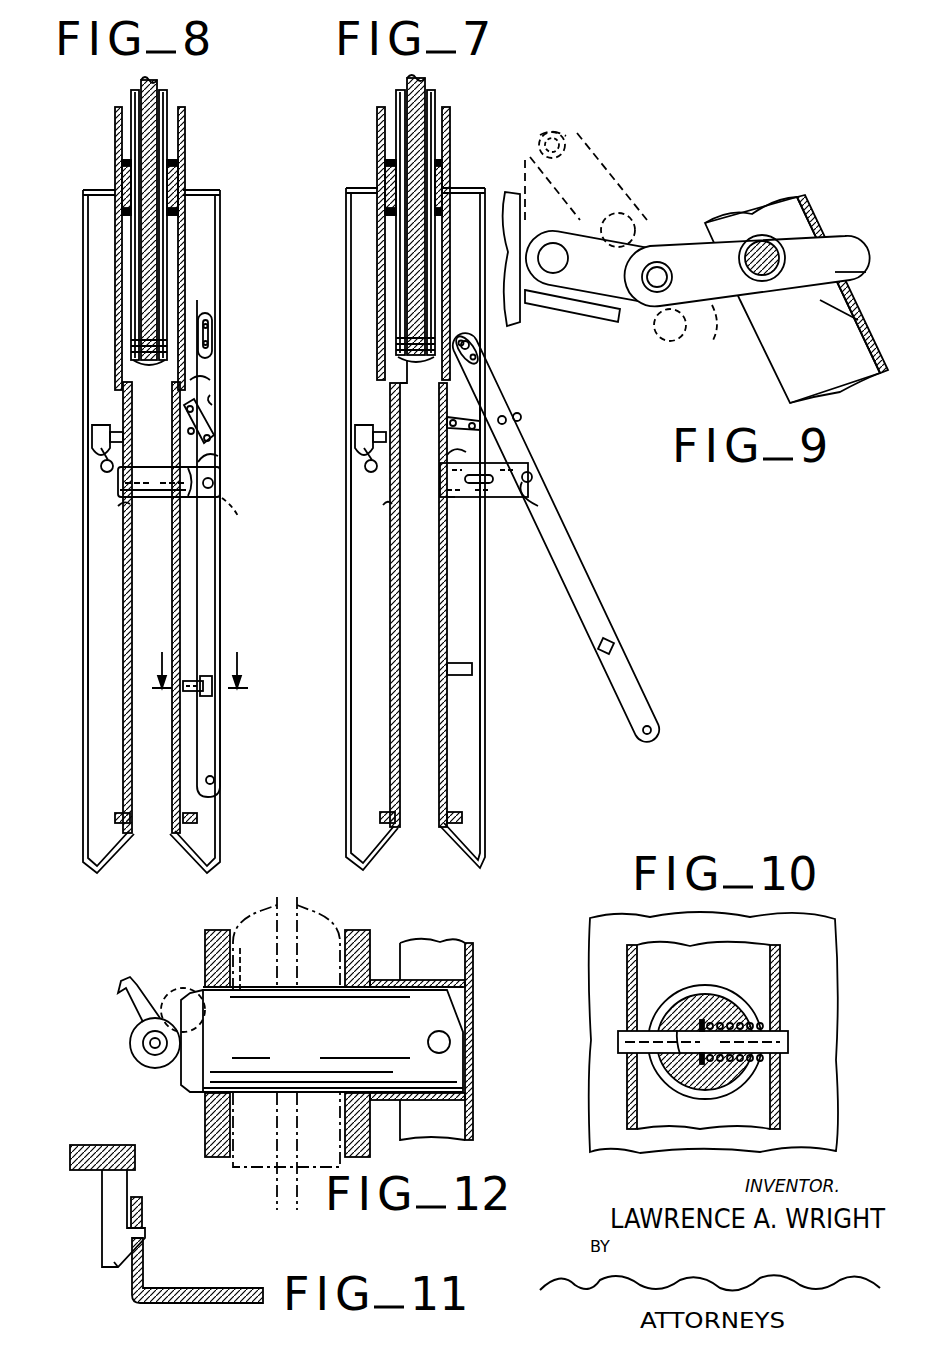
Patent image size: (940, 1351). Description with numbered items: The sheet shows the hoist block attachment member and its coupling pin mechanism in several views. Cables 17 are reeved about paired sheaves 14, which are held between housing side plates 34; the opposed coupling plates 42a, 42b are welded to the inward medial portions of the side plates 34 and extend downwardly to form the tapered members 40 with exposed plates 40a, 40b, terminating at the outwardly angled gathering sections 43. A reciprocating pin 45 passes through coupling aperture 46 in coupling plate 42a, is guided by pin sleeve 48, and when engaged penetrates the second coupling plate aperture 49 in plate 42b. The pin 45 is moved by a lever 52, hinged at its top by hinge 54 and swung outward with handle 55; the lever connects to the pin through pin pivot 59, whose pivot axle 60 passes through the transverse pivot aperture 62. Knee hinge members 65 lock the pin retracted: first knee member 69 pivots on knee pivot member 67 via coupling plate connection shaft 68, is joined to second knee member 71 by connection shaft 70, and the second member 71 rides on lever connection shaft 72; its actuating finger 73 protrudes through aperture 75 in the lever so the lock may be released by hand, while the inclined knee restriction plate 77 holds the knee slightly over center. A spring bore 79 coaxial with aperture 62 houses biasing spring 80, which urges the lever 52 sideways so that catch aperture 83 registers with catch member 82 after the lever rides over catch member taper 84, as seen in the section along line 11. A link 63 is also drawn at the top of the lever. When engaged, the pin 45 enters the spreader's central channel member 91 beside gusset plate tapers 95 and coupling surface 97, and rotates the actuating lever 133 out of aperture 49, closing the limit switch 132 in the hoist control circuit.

In FIG. 8, the sheaves 14 is at (133, 95).
In FIG. 7, the sheaves 14 is at (398, 95).
In FIG. 8, the cables 17 is at (157, 80).
In FIG. 7, the cables 17 is at (425, 78).
In FIG. 8, the housing side plates 34 is at (115, 150).
In FIG. 7, the housing side plates 34 is at (377, 138).
In FIG. 8, the tapered members 40 is at (82, 655).
In FIG. 7, the tapered members 40 is at (490, 586).
In FIG. 7, the exposed plate 40a is at (488, 632).
In FIG. 8, the exposed plate 40b is at (83, 605).
In FIG. 7, the exposed plate 40b is at (346, 610).
In FIG. 8, the coupling plate 42a is at (231, 607).
In FIG. 7, the coupling plate 42a is at (447, 752).
In FIG. 9, the coupling plate 42a is at (514, 185).
In FIG. 12, the coupling plate 42a is at (370, 1148).
In FIG. 8, the coupling plate 42b is at (123, 745).
In FIG. 7, the coupling plate 42b is at (390, 746).
In FIG. 12, the coupling plate 42b is at (205, 1124).
In FIG. 8, the gathering sections 43 is at (186, 860).
In FIG. 7, the gathering sections 43 is at (450, 850).
In FIG. 8, the reciprocating pin 45 is at (158, 500).
In FIG. 7, the reciprocating pin 45 is at (505, 500).
In FIG. 10, the reciprocating pin 45 is at (712, 1002).
In FIG. 12, the reciprocating pin 45 is at (334, 1050).
In FIG. 8, the coupling aperture 46 is at (251, 514).
In FIG. 7, the coupling aperture 46 is at (447, 495).
In FIG. 8, the pin sleeve 48 is at (218, 457).
In FIG. 7, the pin sleeve 48 is at (447, 456).
In FIG. 12, the pin sleeve 48 is at (462, 1102).
In FIG. 8, the second coupling plate aperture 49 is at (118, 505).
In FIG. 7, the second coupling plate aperture 49 is at (385, 500).
In FIG. 12, the second coupling plate aperture 49 is at (205, 985).
In FIG. 8, the lever 52 is at (214, 592).
In FIG. 7, the lever 52 is at (584, 594).
In FIG. 9, the lever 52 is at (796, 309).
In FIG. 10, the lever 52 is at (630, 958).
In FIG. 12, the lever 52 is at (474, 960).
In FIG. 7, the hinge 54 is at (438, 352).
In FIG. 8, the handle 55 is at (218, 765).
In FIG. 7, the handle 55 is at (660, 727).
In FIG. 8, the pin pivot 59 is at (228, 482).
In FIG. 7, the pin pivot 59 is at (538, 470).
In FIG. 7, the pivot axle 60 is at (540, 502).
In FIG. 10, the pivot axle 60 is at (618, 1044).
In FIG. 12, the pivot axle 60 is at (450, 1042).
In FIG. 10, the pivot aperture 62 is at (678, 1034).
In FIG. 8, the link 63 is at (212, 334).
In FIG. 7, the link 63 is at (482, 360).
In FIG. 8, the knee hinge members 65 is at (215, 404).
In FIG. 7, the knee hinge members 65 is at (500, 410).
In FIG. 9, the knee hinge members 65 is at (690, 225).
In FIG. 9, the knee pivot member 67 is at (540, 220).
In FIG. 9, the coupling plate connection shaft 68 is at (551, 274).
In FIG. 9, the first knee member 69 is at (637, 236).
In FIG. 9, the connection shaft 70 is at (652, 293).
In FIG. 9, the second knee member 71 is at (747, 298).
In FIG. 7, the lever connection shaft 72 is at (522, 422).
In FIG. 9, the lever connection shaft 72 is at (766, 247).
In FIG. 9, the actuating finger 73 is at (853, 257).
In FIG. 9, the aperture 75 is at (845, 320).
In FIG. 9, the knee restriction plate 77 is at (600, 322).
In FIG. 10, the spring bore 79 is at (750, 1026).
In FIG. 10, the biasing spring 80 is at (746, 1062).
In FIG. 8, the catch member 82 is at (190, 695).
In FIG. 7, the catch member 82 is at (470, 678).
In FIG. 11, the catch member 82 is at (102, 1216).
In FIG. 8, the catch aperture 83 is at (212, 690).
In FIG. 7, the catch aperture 83 is at (616, 653).
In FIG. 11, the catch aperture 83 is at (146, 1262).
In FIG. 11, the catch member taper 84 is at (124, 1266).
In FIG. 12, the central channel member 91 is at (277, 1196).
In FIG. 12, the gusset plate tapers 95 is at (314, 926).
In FIG. 12, the coupling surface 97 is at (240, 945).
In FIG. 8, the section line 11 is at (202, 655).
In FIG. 8, the limit switch 132 is at (92, 430).
In FIG. 7, the limit switch 132 is at (355, 432).
In FIG. 8, the actuating lever 133 is at (100, 470).
In FIG. 7, the actuating lever 133 is at (366, 472).
In FIG. 12, the actuating lever 133 is at (130, 1010).